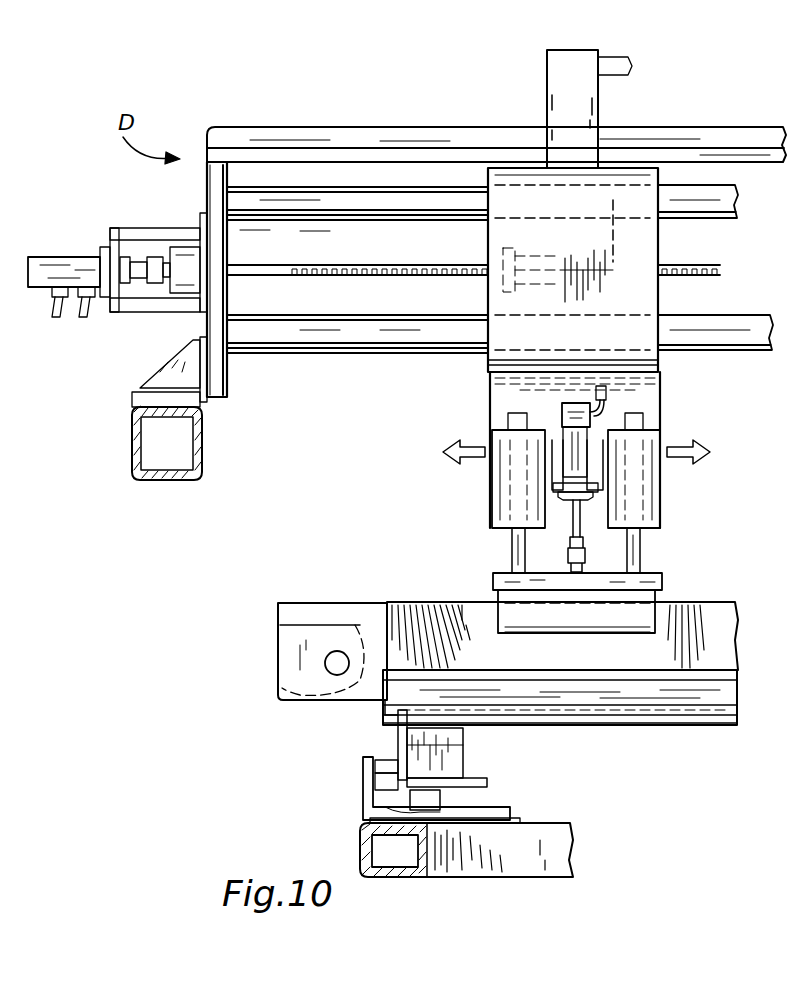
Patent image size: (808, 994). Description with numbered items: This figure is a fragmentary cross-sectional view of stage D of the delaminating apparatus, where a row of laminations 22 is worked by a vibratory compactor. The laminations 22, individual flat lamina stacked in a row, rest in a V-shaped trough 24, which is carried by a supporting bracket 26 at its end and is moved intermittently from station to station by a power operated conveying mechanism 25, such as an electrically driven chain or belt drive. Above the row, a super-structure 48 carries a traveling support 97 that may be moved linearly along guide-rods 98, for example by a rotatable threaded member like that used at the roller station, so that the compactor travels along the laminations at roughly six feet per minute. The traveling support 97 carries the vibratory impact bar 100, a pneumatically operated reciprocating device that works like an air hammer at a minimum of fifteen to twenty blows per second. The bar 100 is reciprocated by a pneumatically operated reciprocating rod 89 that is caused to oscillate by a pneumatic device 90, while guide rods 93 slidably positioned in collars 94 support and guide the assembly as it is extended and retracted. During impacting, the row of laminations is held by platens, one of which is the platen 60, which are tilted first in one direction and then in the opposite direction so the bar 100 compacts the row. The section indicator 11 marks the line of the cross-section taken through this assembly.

The super-structure 48 is at (428, 138).
The guide-rods 98 is at (338, 272).
The traveling support 97 is at (492, 237).
The pneumatic device 90 is at (565, 430).
The collars 94 is at (510, 484).
The guide rods 93 is at (512, 549).
The reciprocating rod 89 is at (585, 541).
The vibratory bar 100 is at (638, 613).
The section line 11- 11 is at (403, 603).
The platen 60 is at (386, 606).
The laminations 22 is at (708, 630).
The V-shaped trough 24 is at (716, 697).
The supporting bracket 26 is at (465, 750).
The conveying mechanism 25 is at (521, 811).